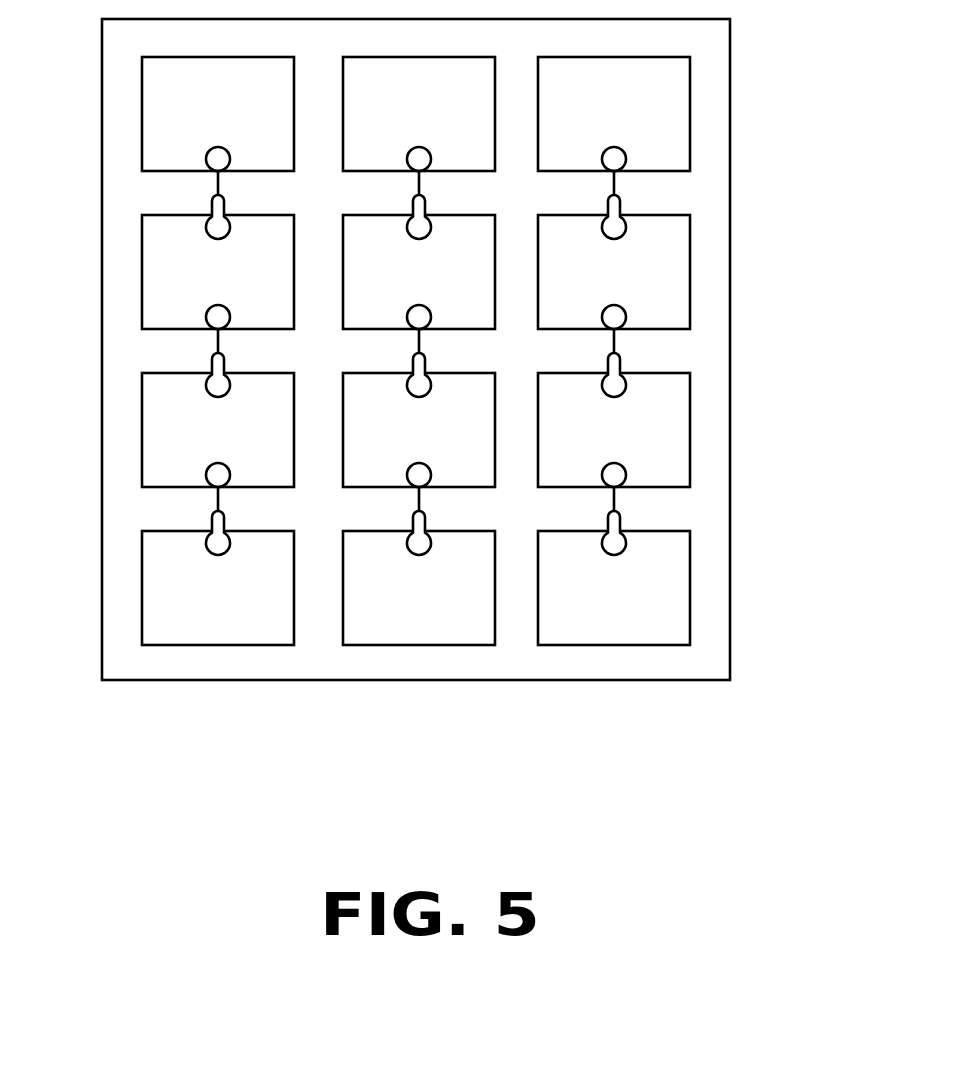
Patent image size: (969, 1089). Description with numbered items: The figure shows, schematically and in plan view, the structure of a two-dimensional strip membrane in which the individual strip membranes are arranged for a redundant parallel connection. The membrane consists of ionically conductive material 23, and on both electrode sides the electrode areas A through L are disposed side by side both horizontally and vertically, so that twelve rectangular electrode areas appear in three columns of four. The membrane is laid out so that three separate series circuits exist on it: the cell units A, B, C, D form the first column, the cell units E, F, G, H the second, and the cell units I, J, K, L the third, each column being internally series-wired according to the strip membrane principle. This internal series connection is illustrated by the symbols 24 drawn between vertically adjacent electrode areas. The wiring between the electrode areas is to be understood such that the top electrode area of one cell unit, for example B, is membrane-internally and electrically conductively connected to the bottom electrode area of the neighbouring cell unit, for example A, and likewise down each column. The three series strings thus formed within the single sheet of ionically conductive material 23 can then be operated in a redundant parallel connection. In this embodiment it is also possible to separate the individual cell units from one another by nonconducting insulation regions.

The ionically conductive material 23 is at (705, 258).
The symbols 24 is at (213, 200).
The cell unit A is at (218, 114).
The cell unit B is at (218, 272).
The cell unit C is at (218, 430).
The cell unit D is at (218, 588).
The cell unit E is at (419, 114).
The cell unit F is at (419, 272).
The cell unit G is at (419, 430).
The cell unit H is at (419, 588).
The cell unit I is at (614, 114).
The cell unit J is at (614, 272).
The cell unit K is at (614, 430).
The cell unit L is at (614, 588).